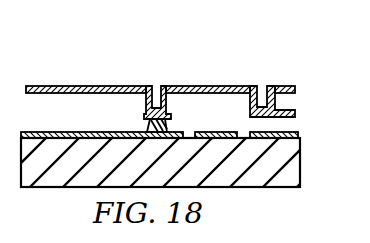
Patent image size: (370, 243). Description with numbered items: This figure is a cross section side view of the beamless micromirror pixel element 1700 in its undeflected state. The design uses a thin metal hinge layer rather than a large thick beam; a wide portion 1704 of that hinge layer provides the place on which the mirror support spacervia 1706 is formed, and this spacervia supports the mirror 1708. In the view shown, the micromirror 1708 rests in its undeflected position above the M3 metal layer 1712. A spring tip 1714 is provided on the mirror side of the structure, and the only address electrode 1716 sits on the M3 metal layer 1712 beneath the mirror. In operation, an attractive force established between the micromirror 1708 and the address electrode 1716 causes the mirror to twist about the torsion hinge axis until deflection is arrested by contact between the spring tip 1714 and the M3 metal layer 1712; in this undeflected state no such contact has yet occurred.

The beamless micromirror pixel element 1700 is at (195, 60).
The wide portion 1704 is at (171, 116).
The mirror support spacervia 1706 is at (146, 95).
The mirror 1708 is at (108, 85).
The M3 metal layer 1712 is at (300, 133).
The spring tip 1714 is at (290, 110).
The address electrode 1716 is at (229, 135).